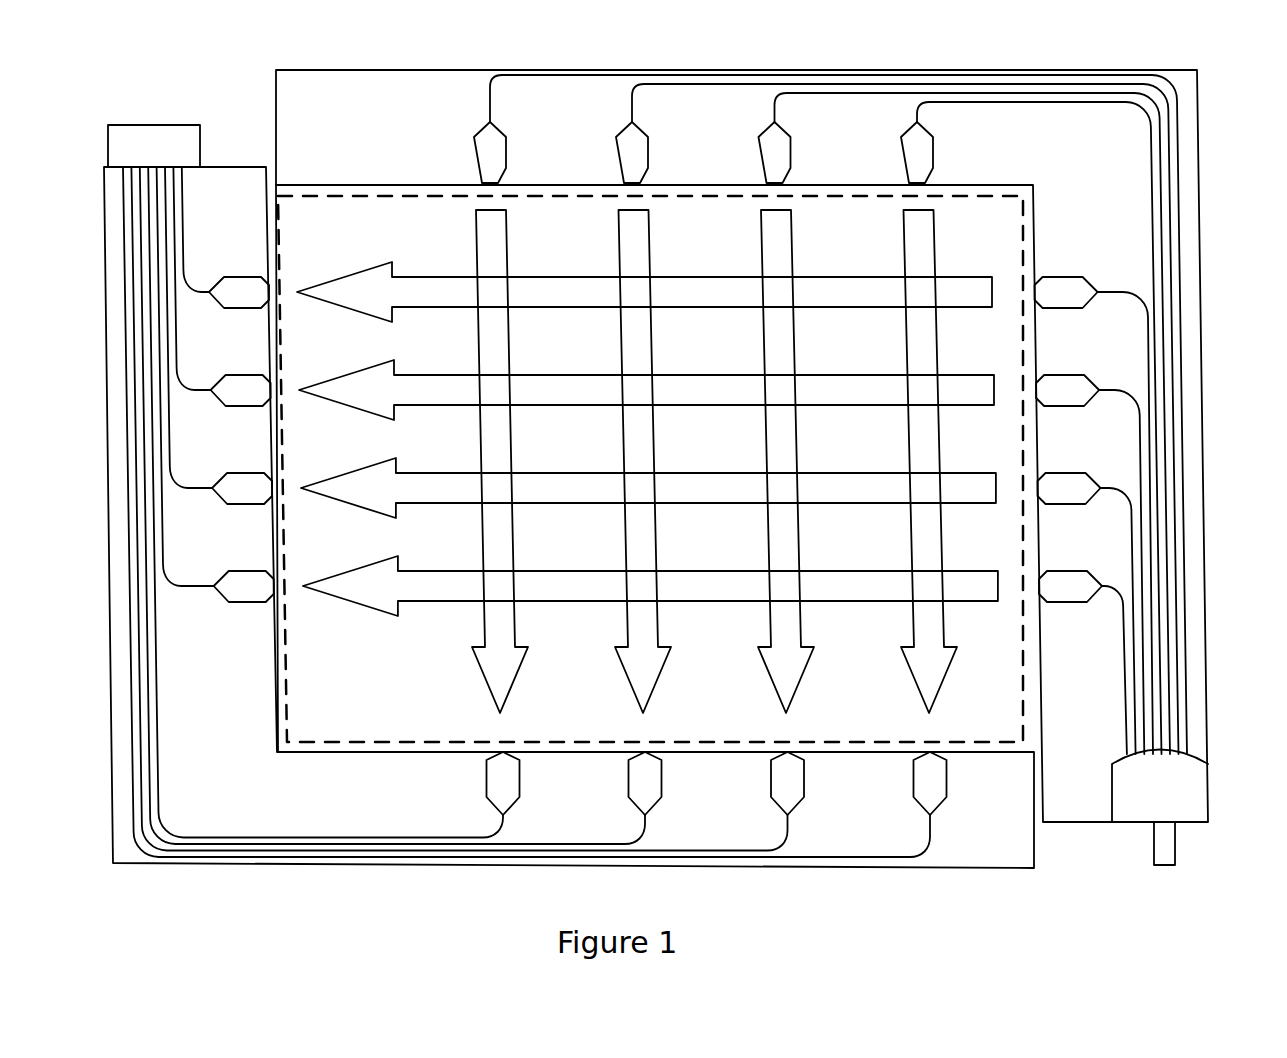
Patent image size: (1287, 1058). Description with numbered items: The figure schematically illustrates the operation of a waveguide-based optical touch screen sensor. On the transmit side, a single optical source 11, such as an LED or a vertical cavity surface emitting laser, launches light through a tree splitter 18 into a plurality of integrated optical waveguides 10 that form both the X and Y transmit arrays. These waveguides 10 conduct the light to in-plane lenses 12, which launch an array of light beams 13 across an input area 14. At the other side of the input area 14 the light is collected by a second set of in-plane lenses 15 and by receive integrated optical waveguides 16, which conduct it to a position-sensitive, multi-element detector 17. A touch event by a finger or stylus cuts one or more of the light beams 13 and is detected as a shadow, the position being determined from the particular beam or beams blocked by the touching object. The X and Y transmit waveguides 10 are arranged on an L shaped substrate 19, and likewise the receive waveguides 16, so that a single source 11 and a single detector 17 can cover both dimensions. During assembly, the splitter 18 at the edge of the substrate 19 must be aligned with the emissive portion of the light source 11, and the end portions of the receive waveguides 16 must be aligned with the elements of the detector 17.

The integrated optical waveguides 10 is at (1170, 352).
The optical source 11 is at (1166, 844).
The in-plane lenses 12 is at (484, 150).
The light beams 13 is at (914, 297).
The input area 14 is at (650, 469).
The second set of in-plane lenses 15 is at (243, 590).
The integrated optical waveguides 16 is at (138, 457).
The position-sensitive detector 17 is at (143, 127).
The 1×N tree splitter 18 is at (1186, 790).
The L shaped substrate 19 is at (297, 112).